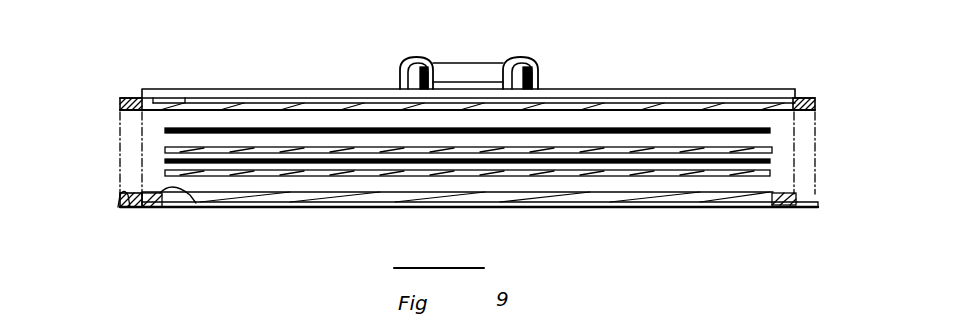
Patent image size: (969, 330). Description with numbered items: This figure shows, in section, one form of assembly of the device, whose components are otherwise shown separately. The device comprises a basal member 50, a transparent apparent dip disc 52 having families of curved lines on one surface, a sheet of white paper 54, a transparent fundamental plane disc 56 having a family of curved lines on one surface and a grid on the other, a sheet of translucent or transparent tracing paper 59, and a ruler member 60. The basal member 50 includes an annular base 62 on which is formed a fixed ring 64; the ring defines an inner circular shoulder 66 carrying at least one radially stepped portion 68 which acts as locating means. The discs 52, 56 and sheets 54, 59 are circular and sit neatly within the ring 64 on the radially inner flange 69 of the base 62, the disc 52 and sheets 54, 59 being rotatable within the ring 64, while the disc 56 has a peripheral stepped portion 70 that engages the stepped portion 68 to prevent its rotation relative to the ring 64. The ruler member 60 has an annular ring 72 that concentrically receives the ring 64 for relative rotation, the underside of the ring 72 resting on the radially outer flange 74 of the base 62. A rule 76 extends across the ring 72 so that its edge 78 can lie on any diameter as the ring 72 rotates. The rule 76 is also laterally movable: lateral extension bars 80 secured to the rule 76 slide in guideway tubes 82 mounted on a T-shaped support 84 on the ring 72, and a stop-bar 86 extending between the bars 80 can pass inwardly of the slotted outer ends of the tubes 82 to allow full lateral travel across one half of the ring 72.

The basal member 50 is at (322, 218).
The transparent apparent dip disc 52 is at (583, 177).
The sheet of white paper 54 is at (680, 163).
The transparent fundamental plane disc 56 is at (753, 147).
The sheet of tracing paper 59 is at (707, 130).
The ruler member 60 is at (116, 96).
The annular base 62 is at (147, 207).
The fixed ring 64 is at (163, 174).
The inner circular shoulder 66 is at (492, 198).
The radially stepped portion 68 is at (190, 202).
The radially inner flange 69 is at (183, 207).
The stepped portion 70 is at (163, 151).
The annular ring 72 is at (118, 105).
The radially outer flange 74 is at (120, 195).
The rule 76 is at (342, 88).
The edge 78 is at (295, 102).
The lateral extension bars 80 is at (408, 68).
The guideway tubes 82 is at (400, 68).
The T-shaped support 84 is at (280, 101).
The stop-bar 86 is at (460, 70).